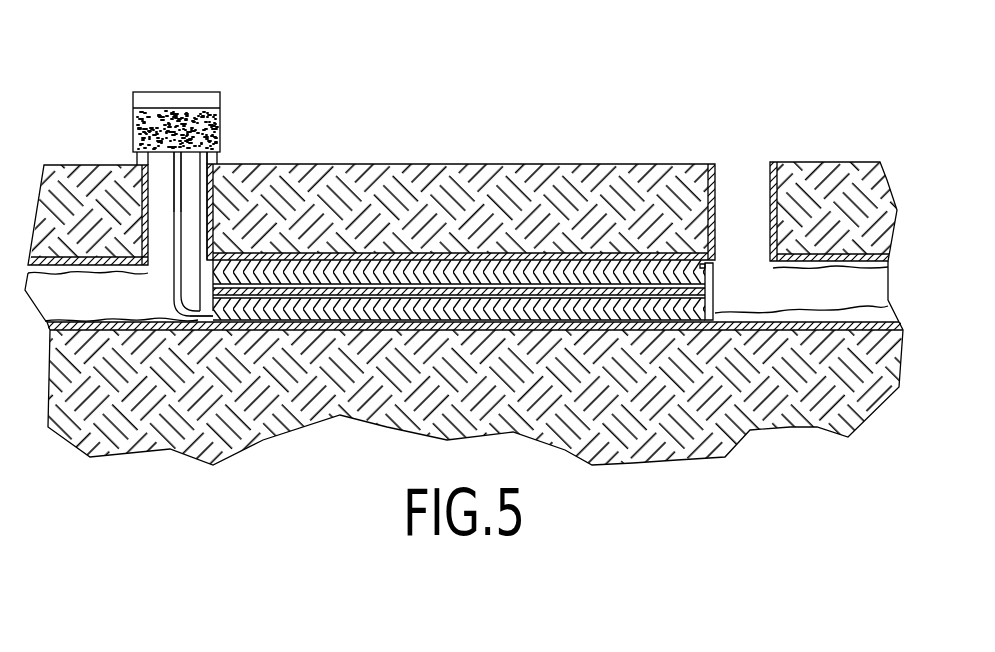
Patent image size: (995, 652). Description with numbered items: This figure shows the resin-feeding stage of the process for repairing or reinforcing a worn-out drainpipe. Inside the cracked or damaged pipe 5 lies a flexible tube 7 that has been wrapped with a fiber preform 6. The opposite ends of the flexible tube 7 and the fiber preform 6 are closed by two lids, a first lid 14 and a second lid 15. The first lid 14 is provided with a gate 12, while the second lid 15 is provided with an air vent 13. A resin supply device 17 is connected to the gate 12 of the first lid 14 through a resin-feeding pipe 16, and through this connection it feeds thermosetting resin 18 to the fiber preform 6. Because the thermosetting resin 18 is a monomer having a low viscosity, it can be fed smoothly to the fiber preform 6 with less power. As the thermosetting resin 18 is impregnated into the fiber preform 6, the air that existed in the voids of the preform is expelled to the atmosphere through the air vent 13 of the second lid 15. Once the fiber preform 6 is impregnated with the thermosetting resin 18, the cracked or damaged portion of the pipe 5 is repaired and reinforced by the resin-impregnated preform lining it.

The pipe 5 is at (820, 295).
The fiber preform 6 is at (388, 318).
The flexible tube 7 is at (547, 293).
The gate 12 is at (197, 317).
The air vent 13 is at (710, 266).
The first lid 14 is at (203, 285).
The second lid 15 is at (716, 306).
The resin-feeding pipe 16 is at (174, 212).
The resin supply device 17 is at (177, 97).
The thermosetting resin 18 is at (208, 128).